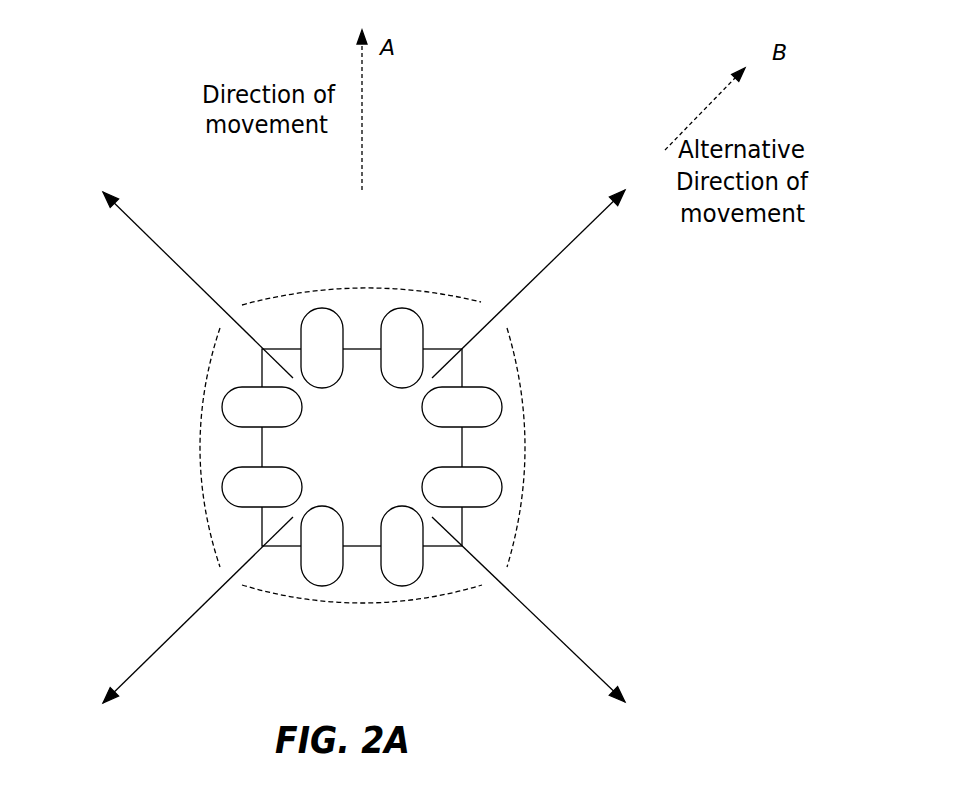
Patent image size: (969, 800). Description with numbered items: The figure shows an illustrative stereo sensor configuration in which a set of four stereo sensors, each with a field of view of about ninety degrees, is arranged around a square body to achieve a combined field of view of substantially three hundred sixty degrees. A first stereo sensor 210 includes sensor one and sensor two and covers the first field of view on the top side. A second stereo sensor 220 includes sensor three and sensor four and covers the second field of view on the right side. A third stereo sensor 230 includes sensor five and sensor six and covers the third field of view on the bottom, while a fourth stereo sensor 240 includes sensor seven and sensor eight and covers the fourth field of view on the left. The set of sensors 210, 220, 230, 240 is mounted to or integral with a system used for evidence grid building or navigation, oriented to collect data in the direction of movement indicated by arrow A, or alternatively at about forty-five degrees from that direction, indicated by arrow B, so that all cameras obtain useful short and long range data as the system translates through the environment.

The first stereo sensor 210 is at (458, 318).
The second stereo sensor 220 is at (492, 361).
The third stereo sensor 230 is at (280, 575).
The fourth stereo sensor 240 is at (236, 362).